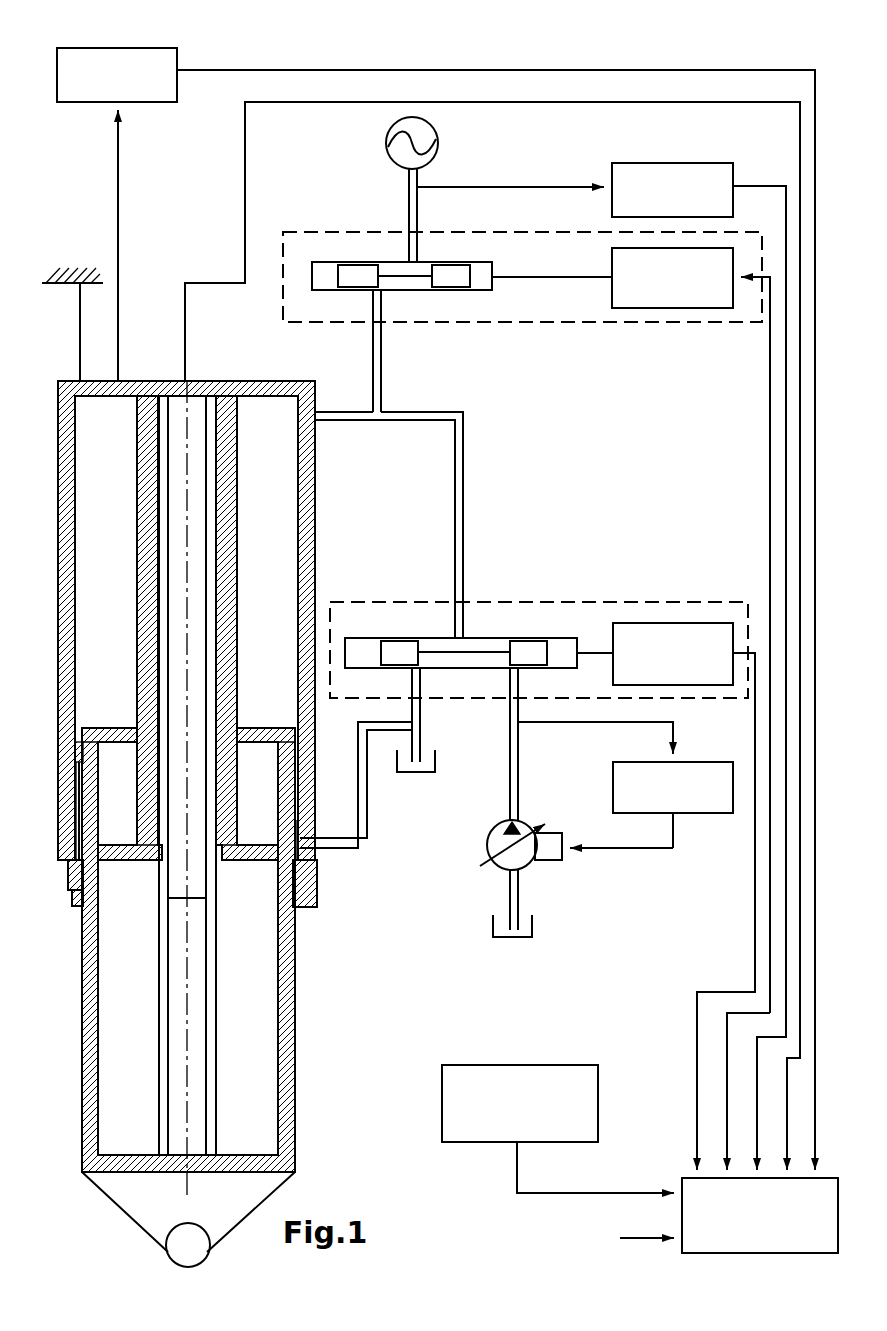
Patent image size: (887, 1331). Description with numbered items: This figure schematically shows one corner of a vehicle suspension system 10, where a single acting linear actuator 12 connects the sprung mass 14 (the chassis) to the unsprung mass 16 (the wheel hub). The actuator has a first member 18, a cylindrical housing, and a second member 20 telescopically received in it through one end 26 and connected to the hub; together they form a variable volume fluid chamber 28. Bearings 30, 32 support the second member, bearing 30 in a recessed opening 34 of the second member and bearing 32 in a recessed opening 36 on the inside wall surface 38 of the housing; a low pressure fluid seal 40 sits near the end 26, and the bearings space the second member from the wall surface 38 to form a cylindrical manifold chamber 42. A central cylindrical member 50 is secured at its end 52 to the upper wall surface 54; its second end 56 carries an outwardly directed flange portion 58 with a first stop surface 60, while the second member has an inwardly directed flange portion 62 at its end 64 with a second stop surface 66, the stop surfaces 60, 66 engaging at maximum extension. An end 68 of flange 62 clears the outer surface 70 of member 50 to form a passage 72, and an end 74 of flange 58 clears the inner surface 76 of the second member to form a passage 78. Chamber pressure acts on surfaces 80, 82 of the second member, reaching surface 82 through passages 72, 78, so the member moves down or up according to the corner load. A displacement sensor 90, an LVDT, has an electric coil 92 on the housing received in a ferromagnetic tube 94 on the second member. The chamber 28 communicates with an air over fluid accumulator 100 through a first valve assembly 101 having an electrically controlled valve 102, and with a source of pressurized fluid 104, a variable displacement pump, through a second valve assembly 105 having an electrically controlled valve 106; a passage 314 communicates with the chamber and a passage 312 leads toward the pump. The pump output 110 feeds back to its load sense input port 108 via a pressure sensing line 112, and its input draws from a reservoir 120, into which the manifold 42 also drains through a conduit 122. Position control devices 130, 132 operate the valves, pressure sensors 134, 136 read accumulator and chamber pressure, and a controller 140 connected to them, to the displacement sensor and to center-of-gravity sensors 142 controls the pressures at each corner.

The suspension system 10 is at (590, 58).
The linear actuator 12 is at (57, 368).
The sprung mass 14 is at (78, 268).
The unsprung mass 16 is at (183, 1243).
The first member 18 is at (58, 496).
The second member 20 is at (82, 1005).
The end of cylindrical housing 26 is at (68, 903).
The variable volume fluid chamber 28 is at (103, 636).
The bearing 30 is at (77, 752).
The bearing 32 is at (68, 863).
The recessed opening 34 is at (88, 740).
The recessed opening 36 is at (66, 827).
The inside wall surface 38 is at (78, 778).
The low pressure fluid seal 40 is at (74, 905).
The cylindrical manifold chamber 42 is at (298, 820).
The central cylindrical member 50 is at (135, 493).
The end of central cylindrical member 52 is at (146, 400).
The upper wall surface 54 is at (273, 394).
The second end 56 is at (240, 862).
The outwardly directed flange portion 58 is at (120, 862).
The first stop surface 60 is at (250, 845).
The inwardly directed flange portion 62 is at (293, 727).
The end of second member 64 is at (298, 690).
The second stop surface 66 is at (253, 744).
The end of flange 68 is at (139, 745).
The outer surface 70 is at (135, 562).
The passage 72 is at (132, 725).
The end of flange 74 is at (98, 862).
The inner surface 76 is at (278, 1003).
The passage 78 is at (105, 838).
The surface 80 is at (255, 727).
The surface 82 is at (250, 1154).
The displacement sensor 90 is at (256, 562).
The electric coil 92 is at (196, 553).
The ferromagnetic tube 94 is at (157, 1100).
The air over fluid accumulator 100 is at (442, 137).
The first valve assembly 101 is at (355, 230).
The electrically controlled valve 102 is at (494, 263).
The source of pressurized fluid 104 is at (495, 836).
The second valve assembly 105 is at (545, 600).
The electrically controlled valve 106 is at (486, 636).
The load sense input port 108 is at (558, 862).
The pump output 110 is at (522, 828).
The pressure sensing line 112 is at (718, 815).
The reservoir 120 is at (435, 770).
The conduit 122 is at (367, 820).
The position control device 130 is at (675, 308).
The position control device 132 is at (678, 622).
The pressure sensor 134 is at (665, 168).
The pressure sensor 136 is at (165, 97).
The controller 140 is at (688, 1182).
The center-of-gravity sensors 142 is at (517, 1065).
The passage 312 is at (510, 765).
The passage 314 is at (463, 506).